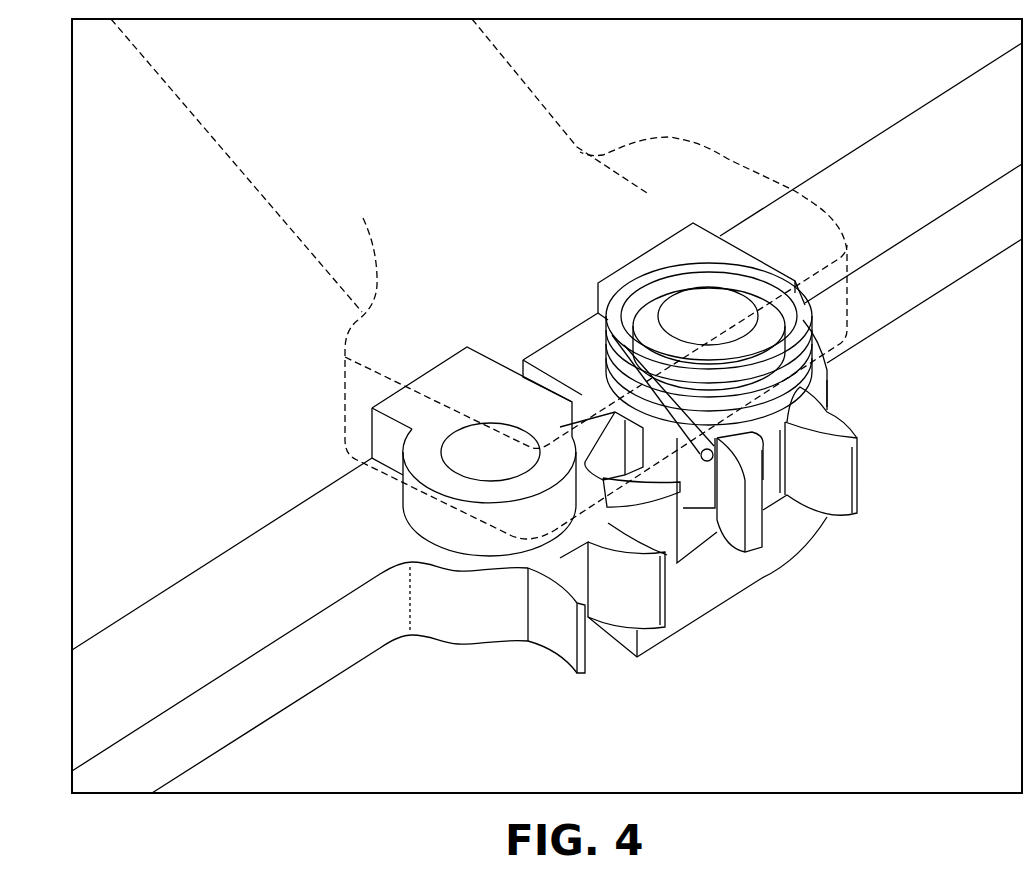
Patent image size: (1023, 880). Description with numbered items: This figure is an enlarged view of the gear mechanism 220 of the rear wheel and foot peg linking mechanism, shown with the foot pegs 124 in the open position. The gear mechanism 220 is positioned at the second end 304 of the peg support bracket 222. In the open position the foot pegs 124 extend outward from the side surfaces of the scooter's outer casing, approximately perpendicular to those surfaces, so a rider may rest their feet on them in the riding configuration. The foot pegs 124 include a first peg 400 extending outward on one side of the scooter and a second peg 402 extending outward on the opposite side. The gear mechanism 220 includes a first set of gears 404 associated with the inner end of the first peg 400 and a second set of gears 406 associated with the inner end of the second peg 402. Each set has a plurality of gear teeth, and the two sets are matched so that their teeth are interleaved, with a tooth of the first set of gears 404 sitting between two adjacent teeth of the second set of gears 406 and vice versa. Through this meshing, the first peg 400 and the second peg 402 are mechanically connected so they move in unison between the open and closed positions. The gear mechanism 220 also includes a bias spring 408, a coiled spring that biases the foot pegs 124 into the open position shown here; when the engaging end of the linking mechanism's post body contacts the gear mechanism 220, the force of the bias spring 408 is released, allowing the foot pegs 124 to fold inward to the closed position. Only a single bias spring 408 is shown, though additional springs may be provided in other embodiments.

The foot pegs 124 is at (308, 457).
The gear mechanism 220 is at (890, 487).
The peg support bracket 222 is at (493, 110).
The second end 304 is at (735, 163).
The first peg 400 is at (547, 418).
The second peg 402 is at (902, 143).
The first set of gears 404 is at (548, 645).
The second set of gears 406 is at (840, 428).
The bias spring 408 is at (803, 320).